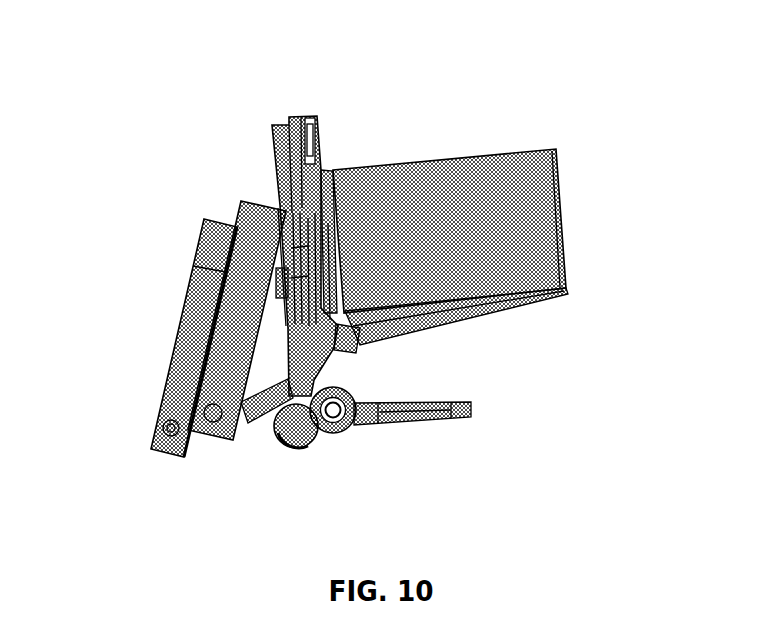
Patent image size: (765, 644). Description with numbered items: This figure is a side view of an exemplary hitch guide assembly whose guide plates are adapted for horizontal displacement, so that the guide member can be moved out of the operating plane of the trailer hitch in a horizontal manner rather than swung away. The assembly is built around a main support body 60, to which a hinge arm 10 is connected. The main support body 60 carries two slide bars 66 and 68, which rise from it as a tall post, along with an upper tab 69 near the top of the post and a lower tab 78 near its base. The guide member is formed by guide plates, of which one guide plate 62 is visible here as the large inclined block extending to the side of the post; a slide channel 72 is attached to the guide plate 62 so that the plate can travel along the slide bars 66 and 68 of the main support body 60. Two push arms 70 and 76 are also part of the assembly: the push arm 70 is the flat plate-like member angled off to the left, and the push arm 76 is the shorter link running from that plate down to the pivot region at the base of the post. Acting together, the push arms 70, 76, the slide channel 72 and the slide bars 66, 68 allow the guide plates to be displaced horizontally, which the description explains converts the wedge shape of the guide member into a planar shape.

The hinge arm 10 is at (423, 317).
The main support body 60 is at (462, 398).
The guide plate 62 is at (562, 244).
The slide bar 66 is at (314, 167).
The slide bar 68 is at (268, 116).
The upper tab 69 is at (306, 124).
The push arm 70 is at (158, 333).
The slide channel 72 is at (268, 186).
The push arm 76 is at (232, 414).
The lower tab 78 is at (353, 335).